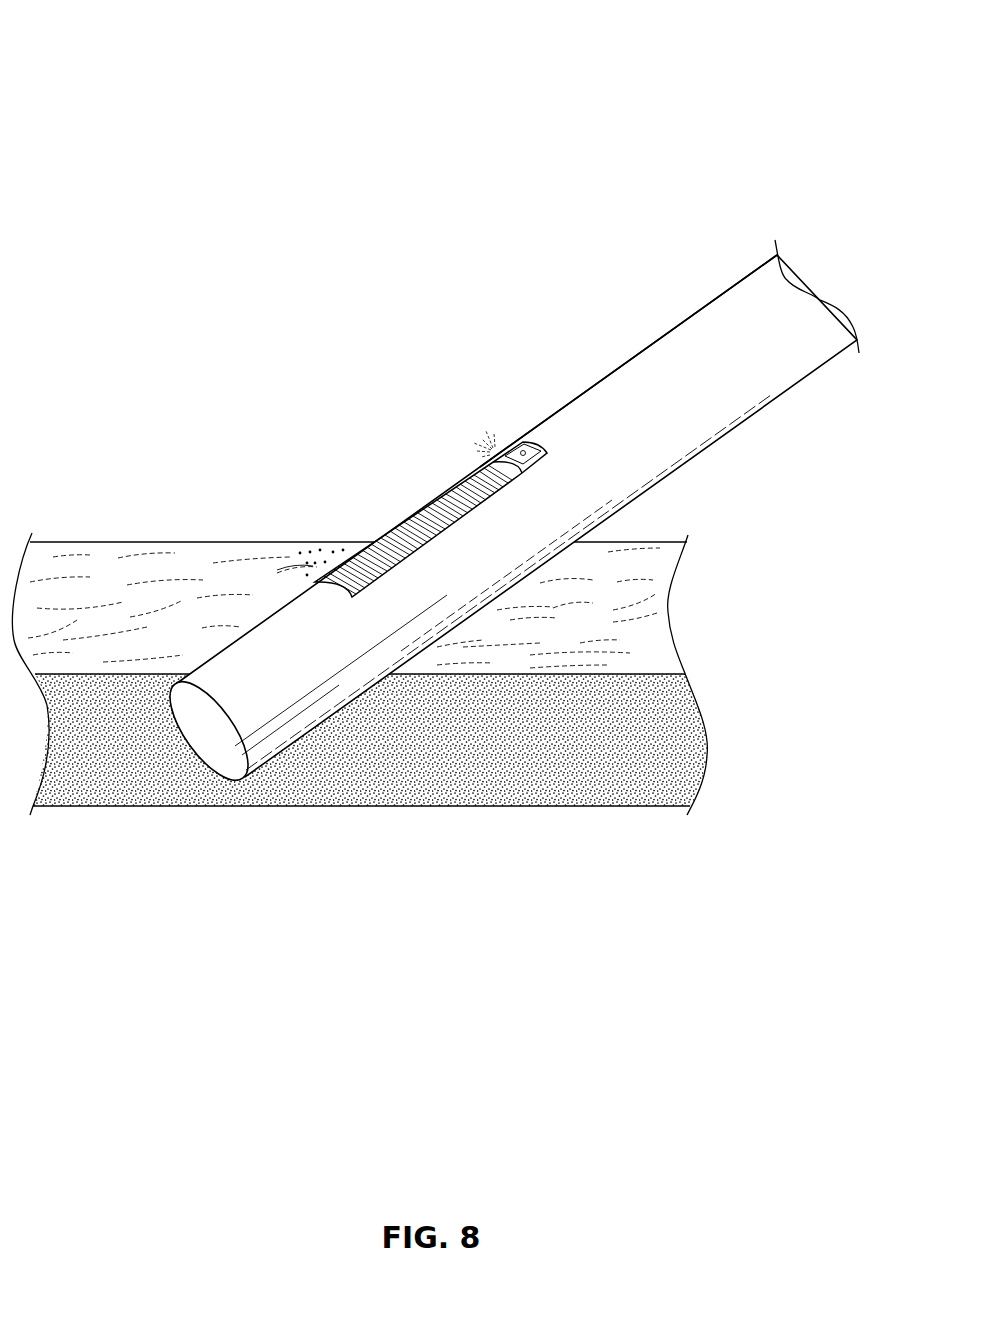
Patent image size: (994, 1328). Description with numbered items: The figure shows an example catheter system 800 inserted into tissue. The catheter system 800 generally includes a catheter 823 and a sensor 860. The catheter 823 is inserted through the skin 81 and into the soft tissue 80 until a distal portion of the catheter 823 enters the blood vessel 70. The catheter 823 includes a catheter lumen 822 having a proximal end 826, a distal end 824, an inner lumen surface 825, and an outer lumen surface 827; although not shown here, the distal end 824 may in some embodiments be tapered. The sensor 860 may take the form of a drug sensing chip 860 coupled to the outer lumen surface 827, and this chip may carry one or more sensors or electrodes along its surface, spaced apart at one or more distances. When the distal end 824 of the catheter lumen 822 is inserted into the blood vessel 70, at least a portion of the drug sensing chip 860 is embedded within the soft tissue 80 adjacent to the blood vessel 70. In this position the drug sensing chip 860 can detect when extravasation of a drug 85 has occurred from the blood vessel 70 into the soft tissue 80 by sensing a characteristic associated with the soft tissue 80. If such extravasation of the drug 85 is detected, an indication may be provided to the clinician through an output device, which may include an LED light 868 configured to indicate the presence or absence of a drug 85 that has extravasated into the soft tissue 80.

The catheter system 800 is at (457, 443).
The soft tissue 80 is at (392, 582).
The skin 81 is at (207, 542).
The drug 85 is at (322, 552).
The blood vessel 70 is at (422, 795).
The catheter lumen 822 is at (491, 490).
The catheter 823 is at (443, 257).
The distal end 824 is at (229, 828).
The inner lumen surface 825 is at (210, 753).
The proximal end 826 is at (777, 222).
The outer lumen surface 827 is at (570, 402).
The sensor 860 is at (423, 487).
The LED light 868 is at (462, 427).